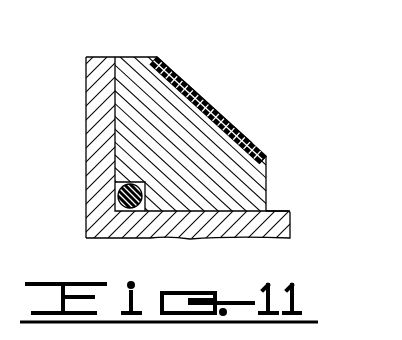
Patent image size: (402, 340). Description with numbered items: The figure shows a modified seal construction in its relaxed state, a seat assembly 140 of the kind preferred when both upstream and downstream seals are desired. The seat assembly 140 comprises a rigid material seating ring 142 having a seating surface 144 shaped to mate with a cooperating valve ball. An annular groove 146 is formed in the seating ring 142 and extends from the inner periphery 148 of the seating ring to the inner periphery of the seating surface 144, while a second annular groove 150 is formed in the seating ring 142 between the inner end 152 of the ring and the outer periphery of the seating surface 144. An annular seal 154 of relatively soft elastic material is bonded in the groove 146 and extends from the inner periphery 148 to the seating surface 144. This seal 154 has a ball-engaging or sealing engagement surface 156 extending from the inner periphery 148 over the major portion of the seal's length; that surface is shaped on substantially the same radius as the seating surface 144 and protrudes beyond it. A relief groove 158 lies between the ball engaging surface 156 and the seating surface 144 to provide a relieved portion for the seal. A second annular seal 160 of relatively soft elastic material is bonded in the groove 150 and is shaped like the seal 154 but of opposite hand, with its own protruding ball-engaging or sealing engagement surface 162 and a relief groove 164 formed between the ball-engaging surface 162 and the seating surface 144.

The seat assembly 140 is at (143, 57).
The seating ring 142 is at (115, 131).
The seating surface 144 is at (208, 128).
The annular groove 146 is at (165, 65).
The inner periphery 148 is at (127, 57).
The second annular groove 150 is at (239, 166).
The inner end 152 is at (266, 188).
The annular seal 154 is at (170, 60).
The sealing engagement surface 156 is at (178, 72).
The relief groove 158 is at (203, 112).
The second annular seal 160 is at (262, 156).
The sealing engagement surface 162 is at (237, 143).
The relief groove 164 is at (228, 128).